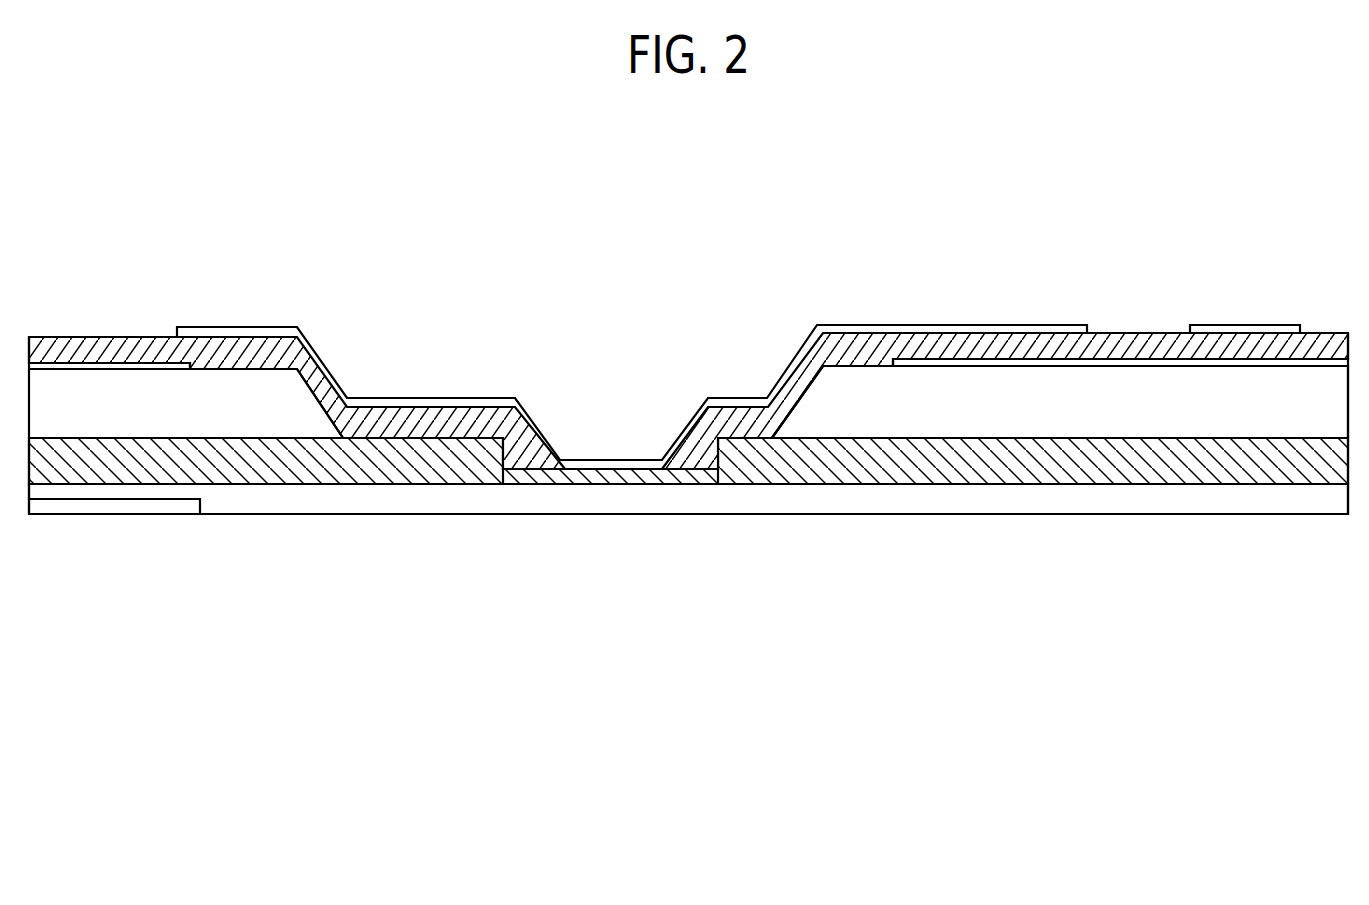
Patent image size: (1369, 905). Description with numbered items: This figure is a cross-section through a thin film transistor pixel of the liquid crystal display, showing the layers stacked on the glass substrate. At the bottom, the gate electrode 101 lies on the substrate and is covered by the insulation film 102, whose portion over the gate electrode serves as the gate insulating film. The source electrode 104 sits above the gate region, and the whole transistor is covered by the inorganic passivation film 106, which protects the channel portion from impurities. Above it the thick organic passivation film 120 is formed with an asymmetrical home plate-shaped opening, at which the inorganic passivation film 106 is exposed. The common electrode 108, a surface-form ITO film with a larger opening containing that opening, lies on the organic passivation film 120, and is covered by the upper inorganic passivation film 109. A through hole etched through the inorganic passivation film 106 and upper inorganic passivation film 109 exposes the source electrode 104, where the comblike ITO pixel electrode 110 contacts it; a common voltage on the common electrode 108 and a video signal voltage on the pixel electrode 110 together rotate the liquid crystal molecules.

The gate electrode 101 is at (127, 507).
The insulation film 102 is at (438, 500).
The source electrode 104 is at (605, 480).
The inorganic passivation film 106 is at (347, 462).
The common electrode 108 is at (70, 347).
The upper inorganic passivation film 109 is at (147, 348).
The pixel electrode 110 is at (318, 352).
The organic passivation film 120 is at (243, 422).